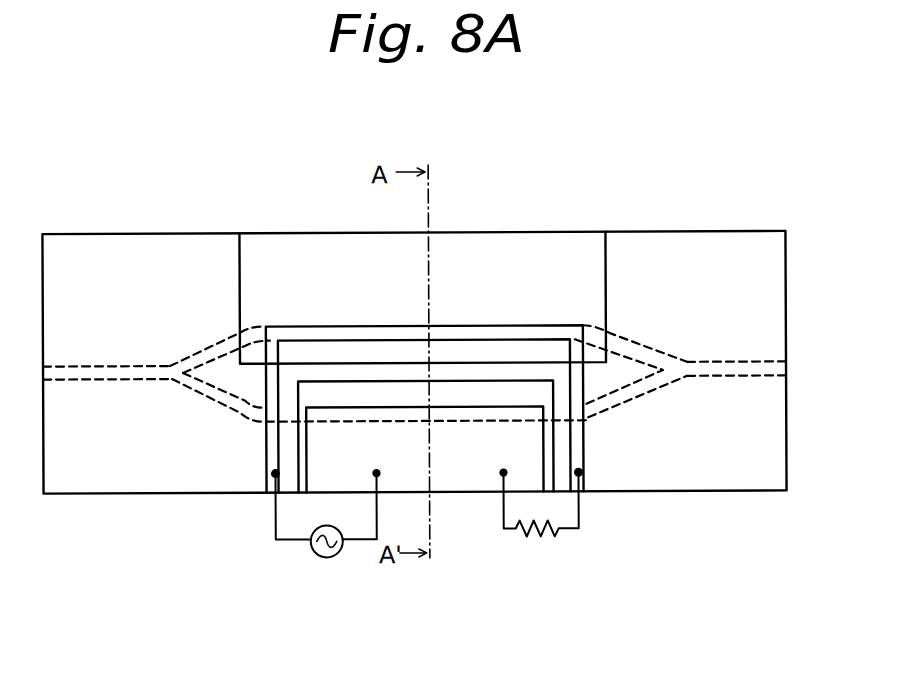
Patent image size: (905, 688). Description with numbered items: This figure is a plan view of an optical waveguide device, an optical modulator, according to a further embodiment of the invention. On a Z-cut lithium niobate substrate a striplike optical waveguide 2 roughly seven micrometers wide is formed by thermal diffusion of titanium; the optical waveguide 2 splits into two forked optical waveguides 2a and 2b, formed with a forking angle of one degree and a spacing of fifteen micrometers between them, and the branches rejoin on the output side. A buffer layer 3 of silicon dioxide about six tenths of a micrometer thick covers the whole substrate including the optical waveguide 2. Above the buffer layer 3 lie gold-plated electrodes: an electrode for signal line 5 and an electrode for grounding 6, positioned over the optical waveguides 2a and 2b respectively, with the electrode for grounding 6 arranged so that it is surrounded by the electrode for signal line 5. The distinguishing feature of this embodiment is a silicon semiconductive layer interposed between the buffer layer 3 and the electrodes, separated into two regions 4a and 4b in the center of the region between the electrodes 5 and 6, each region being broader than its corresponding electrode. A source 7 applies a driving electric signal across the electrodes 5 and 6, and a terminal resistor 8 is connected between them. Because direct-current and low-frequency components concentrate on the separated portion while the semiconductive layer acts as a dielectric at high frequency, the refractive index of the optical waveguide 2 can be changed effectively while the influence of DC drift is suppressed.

The optical waveguide 2 is at (790, 370).
The forked optical waveguide 2a is at (215, 345).
The forked optical waveguide 2b is at (213, 410).
The buffer layer 3 is at (698, 253).
The semiconductive layer region 4a is at (540, 259).
The semiconductive layer region 4b is at (300, 493).
The electrode for signal line 5 is at (577, 450).
The electrode for grounding 6 is at (470, 480).
The source 7 is at (313, 552).
The terminal resistor 8 is at (546, 540).